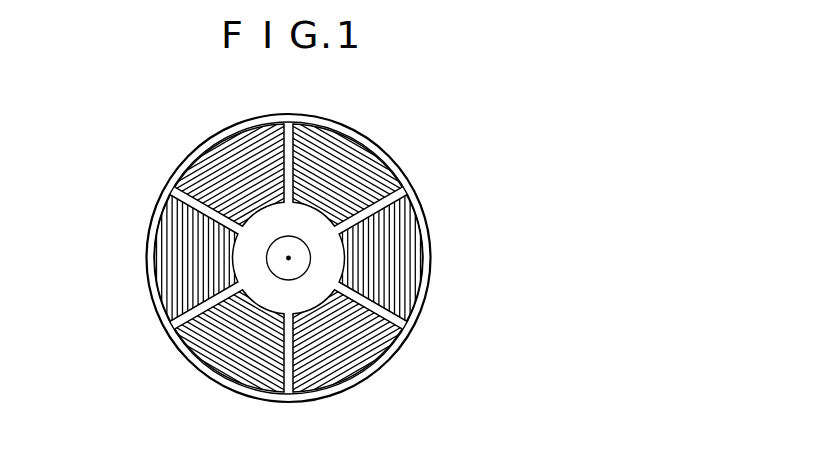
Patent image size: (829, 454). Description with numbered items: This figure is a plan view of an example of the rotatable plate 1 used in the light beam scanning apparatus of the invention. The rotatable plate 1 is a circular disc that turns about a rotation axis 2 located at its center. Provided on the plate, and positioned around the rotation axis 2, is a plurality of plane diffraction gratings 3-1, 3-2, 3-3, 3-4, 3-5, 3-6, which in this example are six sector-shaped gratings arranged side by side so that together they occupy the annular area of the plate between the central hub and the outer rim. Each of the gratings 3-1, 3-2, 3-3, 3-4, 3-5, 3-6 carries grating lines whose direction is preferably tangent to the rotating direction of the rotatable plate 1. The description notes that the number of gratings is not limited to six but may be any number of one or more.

The rotatable plate 1 is at (223, 127).
The rotation axis 2 is at (289, 256).
The plane diffraction grating 3-1 is at (403, 266).
The plane diffraction grating 3-2 is at (358, 360).
The plane diffraction grating 3-3 is at (232, 359).
The plane diffraction grating 3-4 is at (161, 266).
The plane diffraction grating 3-5 is at (189, 174).
The plane diffraction grating 3-6 is at (383, 173).